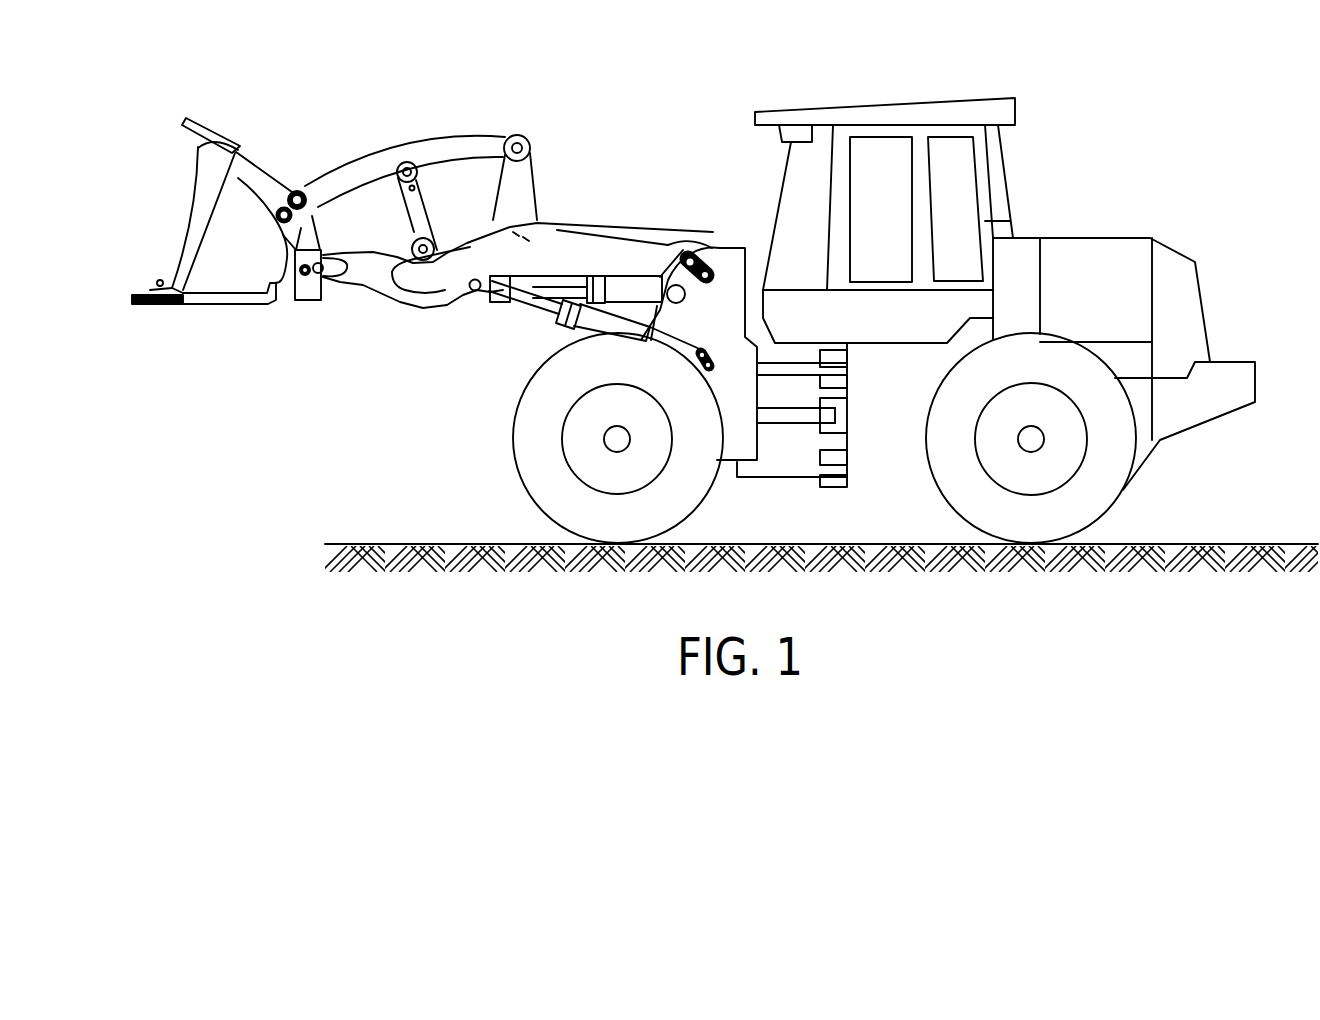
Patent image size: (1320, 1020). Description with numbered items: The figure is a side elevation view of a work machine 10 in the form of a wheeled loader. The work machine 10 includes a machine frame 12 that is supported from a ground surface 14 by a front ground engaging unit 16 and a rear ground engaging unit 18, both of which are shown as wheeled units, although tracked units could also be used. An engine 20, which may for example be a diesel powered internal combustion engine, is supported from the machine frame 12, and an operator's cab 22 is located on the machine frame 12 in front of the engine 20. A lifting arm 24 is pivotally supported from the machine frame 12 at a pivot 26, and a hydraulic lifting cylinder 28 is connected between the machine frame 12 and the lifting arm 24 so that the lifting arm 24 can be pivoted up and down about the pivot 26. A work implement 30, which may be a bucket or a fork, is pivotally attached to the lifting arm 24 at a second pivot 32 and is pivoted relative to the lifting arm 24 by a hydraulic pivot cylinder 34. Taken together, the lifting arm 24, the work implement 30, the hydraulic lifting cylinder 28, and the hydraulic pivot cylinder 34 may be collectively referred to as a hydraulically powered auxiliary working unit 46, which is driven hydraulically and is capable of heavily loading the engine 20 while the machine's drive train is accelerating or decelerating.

The work machine 10 is at (1250, 128).
The machine frame 12 is at (1163, 452).
The ground surface 14 is at (378, 543).
The front ground engaging unit 16 is at (538, 478).
The rear ground engaging unit 18 is at (1097, 490).
The engine 20 is at (1117, 243).
The operator's cab 22 is at (987, 112).
The lifting arm 24 is at (540, 247).
The pivot 26 is at (706, 256).
The hydraulic lifting cylinder 28 is at (600, 323).
The work implement 30 is at (190, 218).
The second pivot 32 is at (302, 285).
The hydraulic pivot cylinder 34 is at (624, 283).
The hydraulically powered auxiliary working unit 46 is at (417, 236).